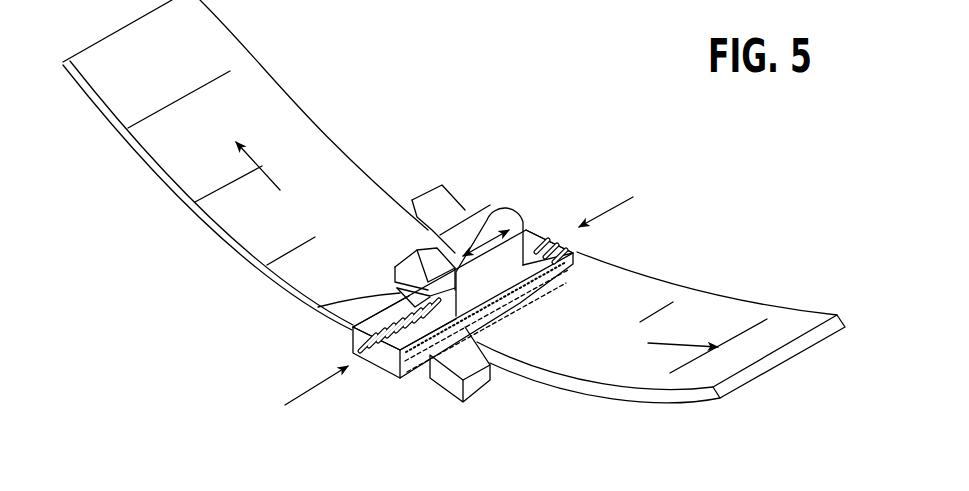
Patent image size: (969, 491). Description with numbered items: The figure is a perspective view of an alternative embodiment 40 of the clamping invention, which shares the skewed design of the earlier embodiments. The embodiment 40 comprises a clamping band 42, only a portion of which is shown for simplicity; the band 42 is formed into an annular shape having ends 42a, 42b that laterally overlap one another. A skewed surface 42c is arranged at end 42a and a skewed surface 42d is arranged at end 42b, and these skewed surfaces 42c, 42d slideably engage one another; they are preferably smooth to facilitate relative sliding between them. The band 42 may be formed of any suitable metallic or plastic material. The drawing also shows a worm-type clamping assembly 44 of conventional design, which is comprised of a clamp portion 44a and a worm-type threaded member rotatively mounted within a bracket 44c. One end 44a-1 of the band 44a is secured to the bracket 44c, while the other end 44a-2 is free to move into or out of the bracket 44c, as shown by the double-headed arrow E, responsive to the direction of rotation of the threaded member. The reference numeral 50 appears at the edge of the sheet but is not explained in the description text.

The embodiment 40 is at (346, 55).
The clamping band 42 is at (168, 199).
The end 42a is at (446, 128).
The end 42b is at (318, 307).
The skewed surface 42c is at (428, 227).
The skewed surface 42d is at (480, 342).
The worm-type clamping assembly 44 is at (762, 231).
The clamp portion 44a is at (572, 252).
The end of band 44a-1 is at (430, 327).
The end of band 44a-2 is at (533, 231).
The bracket 44c is at (468, 227).
The double-headed arrow E is at (487, 227).
The fastener 50 is at (231, 483).